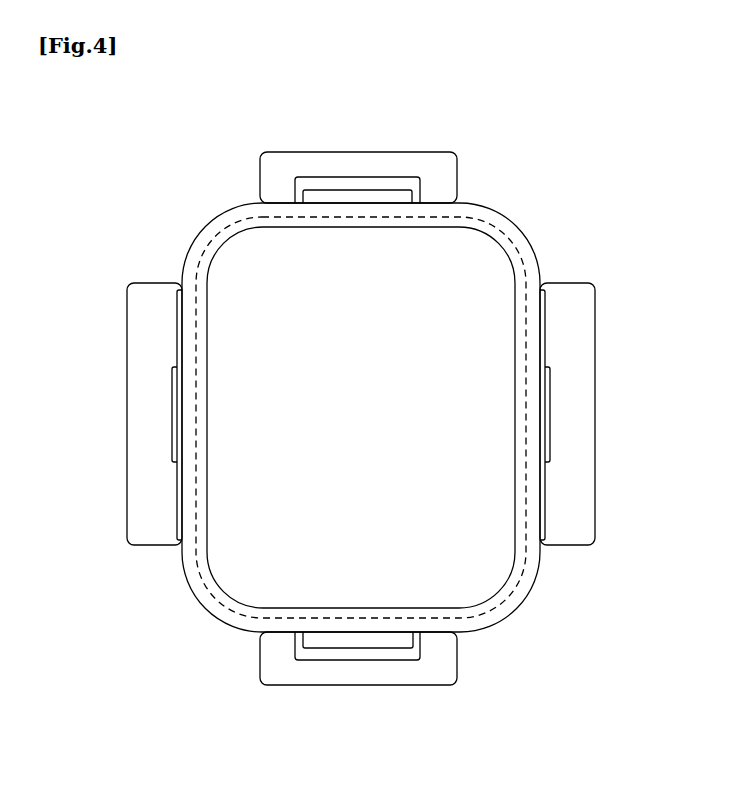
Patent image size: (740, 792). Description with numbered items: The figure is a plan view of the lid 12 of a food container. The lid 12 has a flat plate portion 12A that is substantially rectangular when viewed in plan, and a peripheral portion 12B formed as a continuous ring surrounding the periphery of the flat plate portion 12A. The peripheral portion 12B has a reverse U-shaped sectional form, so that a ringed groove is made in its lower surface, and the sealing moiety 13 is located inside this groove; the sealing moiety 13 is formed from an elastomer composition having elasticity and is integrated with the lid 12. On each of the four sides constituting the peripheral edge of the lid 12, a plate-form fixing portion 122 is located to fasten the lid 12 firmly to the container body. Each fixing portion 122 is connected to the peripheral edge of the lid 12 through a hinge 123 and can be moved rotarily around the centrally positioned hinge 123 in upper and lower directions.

The lid 12 is at (392, 421).
The flat plate portion 12A is at (471, 544).
The peripheral portion 12B is at (510, 605).
The sealing moiety 13 is at (530, 232).
The fixing portion 122 is at (336, 140).
The hinge 123 is at (262, 200).